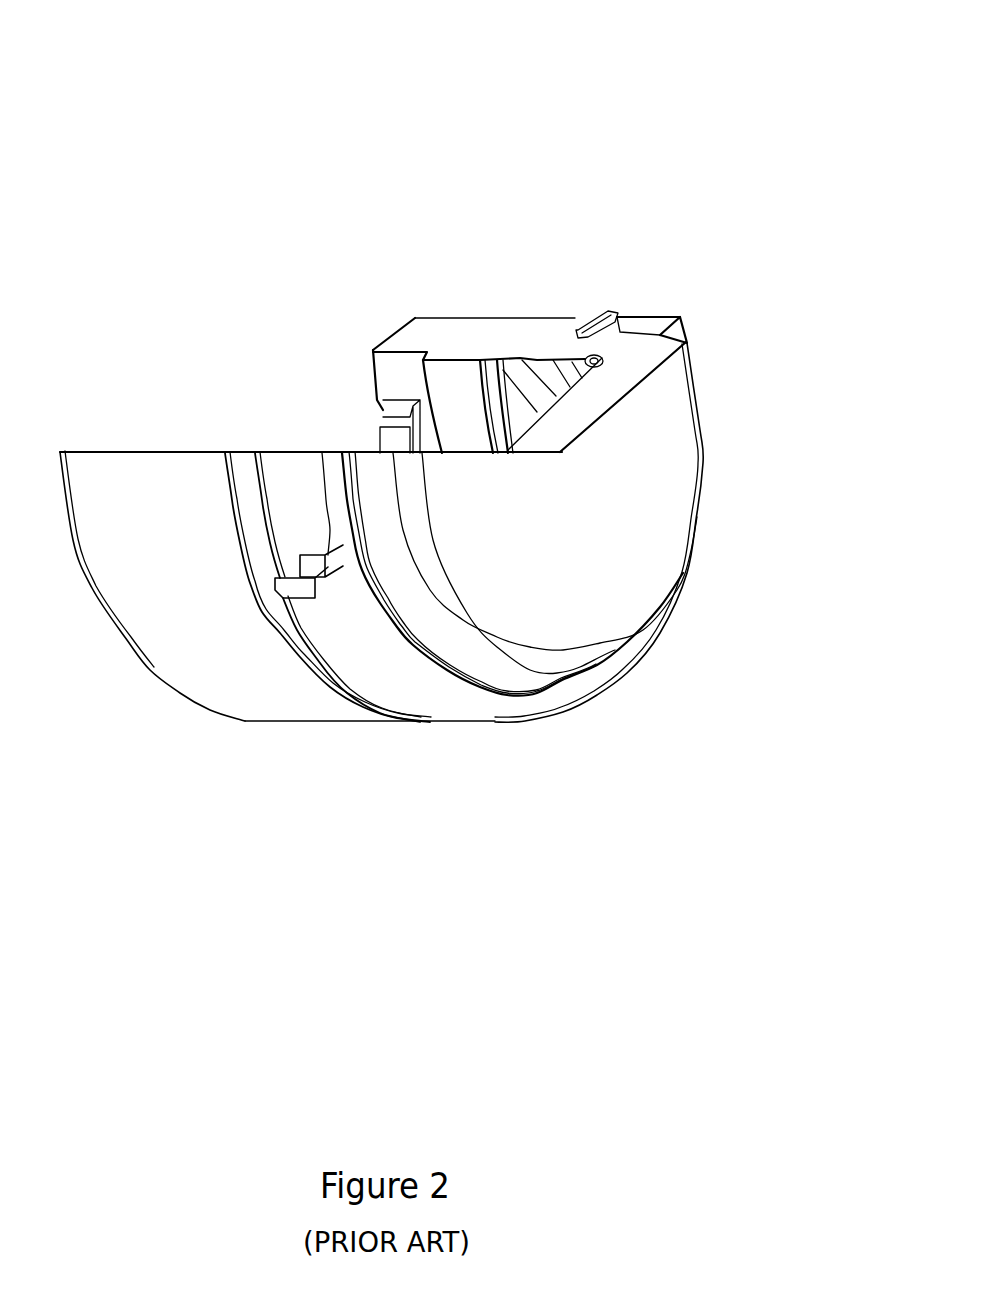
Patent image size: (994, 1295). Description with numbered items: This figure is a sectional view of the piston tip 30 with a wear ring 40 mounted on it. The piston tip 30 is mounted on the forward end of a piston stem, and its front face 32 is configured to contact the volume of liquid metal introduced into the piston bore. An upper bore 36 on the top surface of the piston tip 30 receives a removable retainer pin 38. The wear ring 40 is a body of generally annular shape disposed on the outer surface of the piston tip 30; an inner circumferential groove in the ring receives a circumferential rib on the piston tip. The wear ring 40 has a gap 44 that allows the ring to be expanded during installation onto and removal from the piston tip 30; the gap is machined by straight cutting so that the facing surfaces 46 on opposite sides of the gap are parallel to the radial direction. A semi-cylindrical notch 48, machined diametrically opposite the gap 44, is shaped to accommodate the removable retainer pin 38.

The piston tip 30 is at (724, 46).
The front face 32 is at (607, 465).
The upper bore 36 is at (563, 338).
The removable retainer pin 38 is at (593, 318).
The wear ring 40 is at (648, 325).
The gap 44 is at (265, 590).
The facing surfaces 46 is at (311, 556).
The semi-cylindrical notch 48 is at (612, 303).